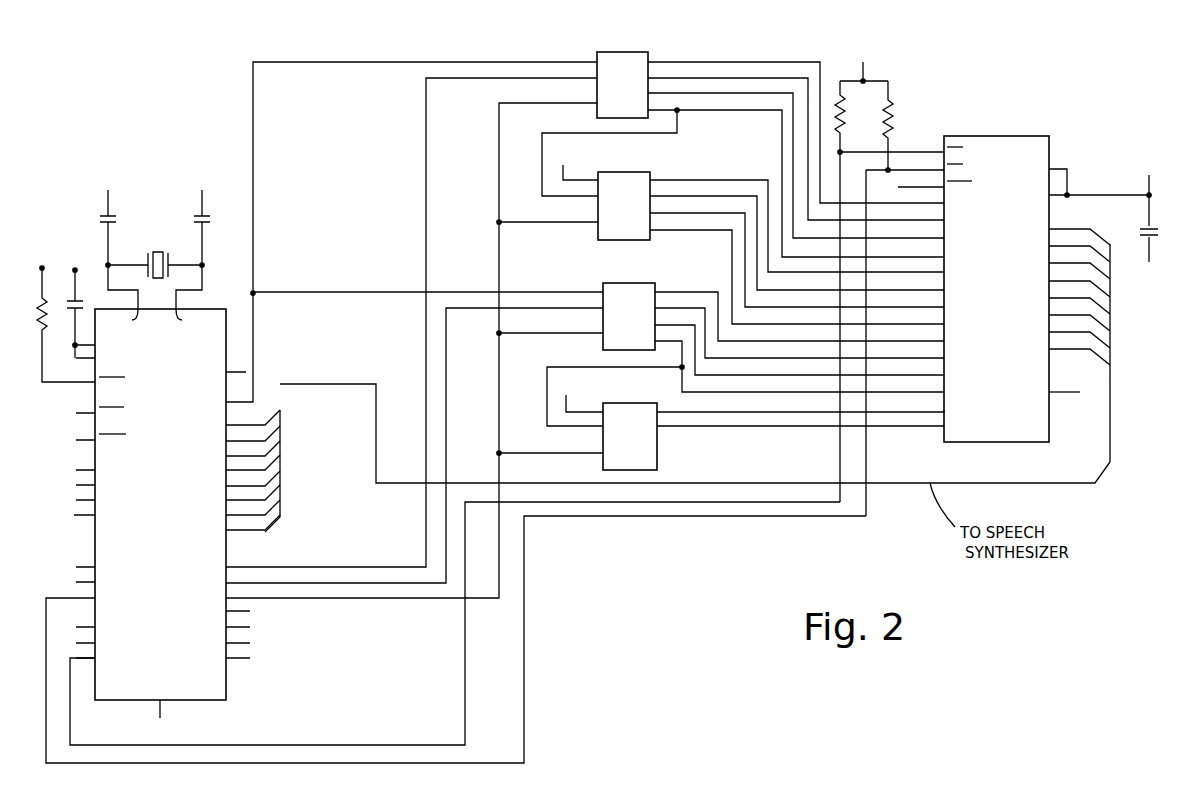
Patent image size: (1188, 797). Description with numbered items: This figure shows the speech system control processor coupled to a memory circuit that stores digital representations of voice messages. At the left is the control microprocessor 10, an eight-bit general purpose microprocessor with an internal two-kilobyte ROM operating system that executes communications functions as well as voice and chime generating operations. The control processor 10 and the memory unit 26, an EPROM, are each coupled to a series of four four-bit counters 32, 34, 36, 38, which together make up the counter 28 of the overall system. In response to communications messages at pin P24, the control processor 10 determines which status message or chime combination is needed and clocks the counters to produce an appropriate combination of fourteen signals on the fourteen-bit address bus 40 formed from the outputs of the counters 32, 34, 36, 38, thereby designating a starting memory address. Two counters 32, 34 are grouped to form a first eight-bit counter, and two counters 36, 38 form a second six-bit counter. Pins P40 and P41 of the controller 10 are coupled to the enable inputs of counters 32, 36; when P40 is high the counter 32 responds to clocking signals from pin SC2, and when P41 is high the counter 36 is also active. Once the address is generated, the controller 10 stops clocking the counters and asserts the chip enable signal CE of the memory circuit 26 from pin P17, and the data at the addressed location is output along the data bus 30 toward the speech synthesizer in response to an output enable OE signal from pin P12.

The control processor 10 is at (207, 308).
The memory circuit 26 is at (997, 142).
The counter 28 is at (630, 522).
The data bus 30 is at (336, 385).
The 4 bit counter 32 is at (645, 52).
The 4 bit counter 34 is at (634, 172).
The 4 bit counter 36 is at (638, 283).
The 4 bit counter 38 is at (638, 403).
The 14 bit address bus 40 is at (897, 462).